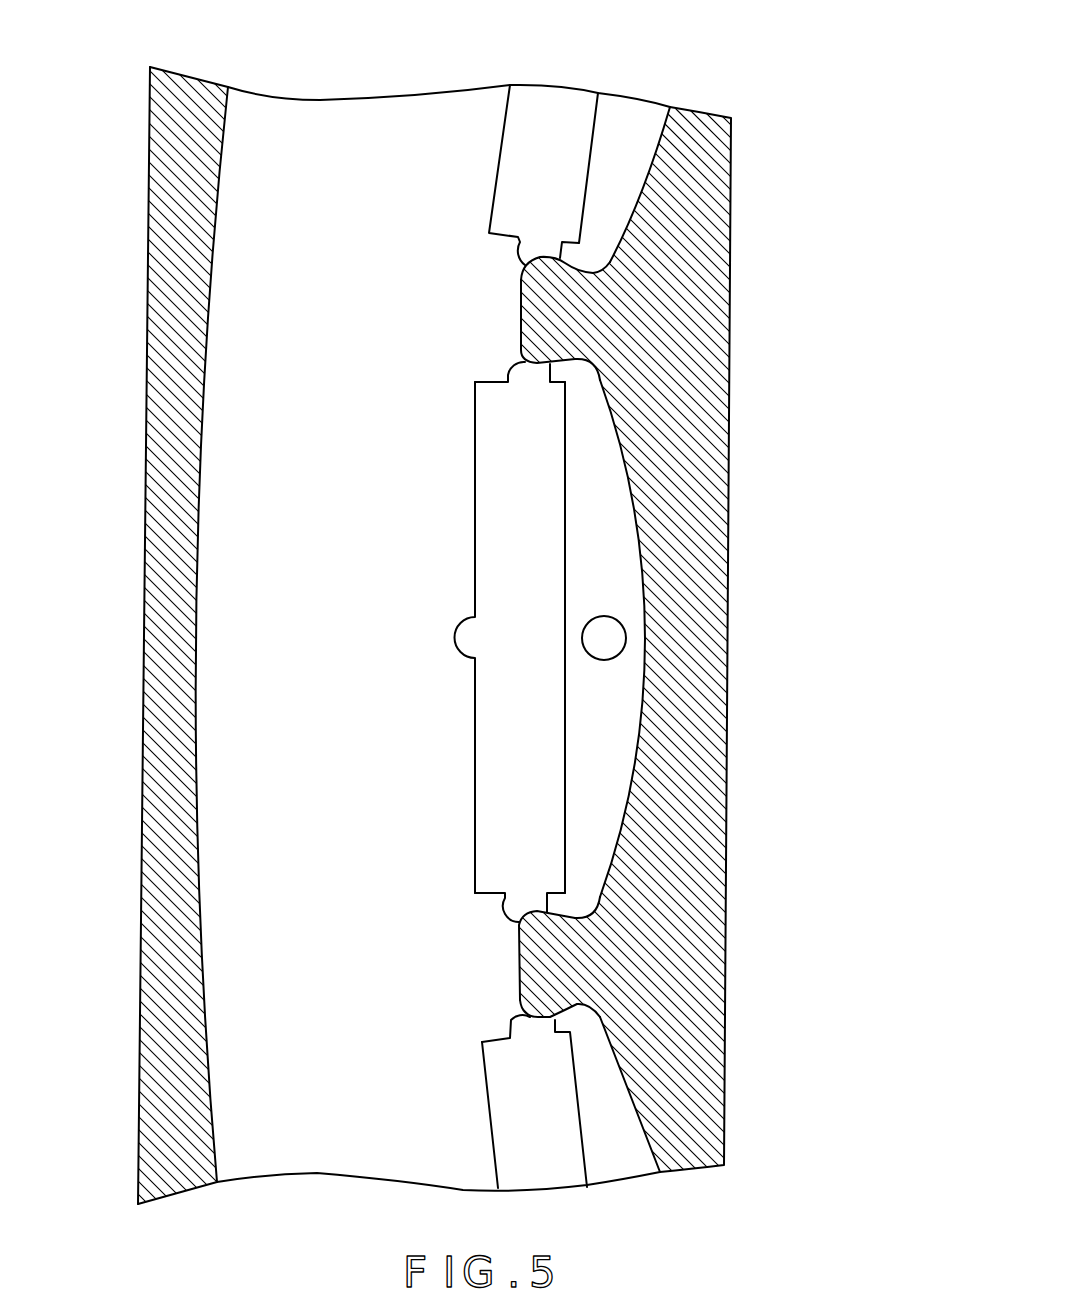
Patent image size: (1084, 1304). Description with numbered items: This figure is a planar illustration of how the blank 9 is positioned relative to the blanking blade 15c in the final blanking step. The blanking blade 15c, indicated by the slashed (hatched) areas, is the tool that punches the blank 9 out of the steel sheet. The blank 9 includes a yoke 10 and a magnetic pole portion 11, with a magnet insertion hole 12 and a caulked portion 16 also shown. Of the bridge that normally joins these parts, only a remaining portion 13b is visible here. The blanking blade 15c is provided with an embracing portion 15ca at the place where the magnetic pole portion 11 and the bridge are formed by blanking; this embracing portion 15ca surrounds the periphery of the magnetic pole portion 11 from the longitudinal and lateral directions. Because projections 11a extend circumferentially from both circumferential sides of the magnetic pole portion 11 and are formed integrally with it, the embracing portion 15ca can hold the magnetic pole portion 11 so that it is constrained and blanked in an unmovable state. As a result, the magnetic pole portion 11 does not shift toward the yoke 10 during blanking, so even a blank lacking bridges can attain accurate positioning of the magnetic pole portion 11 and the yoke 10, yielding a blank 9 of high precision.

The blank 9 is at (389, 81).
The yoke 10 is at (400, 999).
The magnetic pole portion 11 is at (605, 515).
The projection 11a is at (578, 358).
The magnet insertion hole 12 is at (590, 176).
The remaining portion 13b is at (550, 363).
The blanking blade 15c is at (702, 623).
The embracing portion 15ca is at (557, 368).
The caulked portion 16 is at (612, 622).